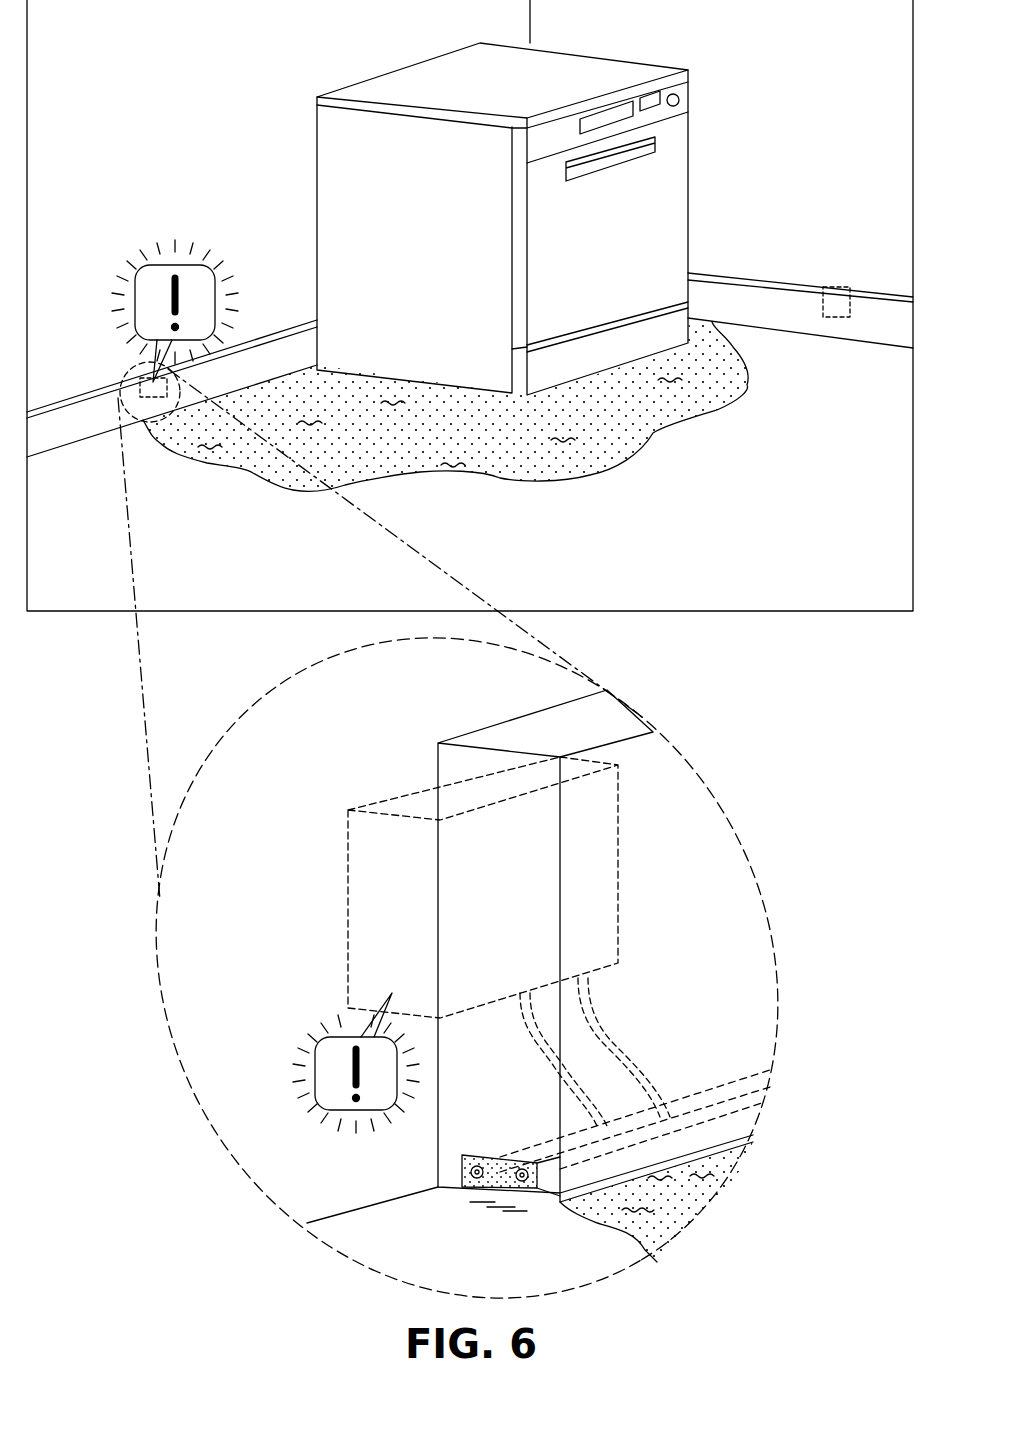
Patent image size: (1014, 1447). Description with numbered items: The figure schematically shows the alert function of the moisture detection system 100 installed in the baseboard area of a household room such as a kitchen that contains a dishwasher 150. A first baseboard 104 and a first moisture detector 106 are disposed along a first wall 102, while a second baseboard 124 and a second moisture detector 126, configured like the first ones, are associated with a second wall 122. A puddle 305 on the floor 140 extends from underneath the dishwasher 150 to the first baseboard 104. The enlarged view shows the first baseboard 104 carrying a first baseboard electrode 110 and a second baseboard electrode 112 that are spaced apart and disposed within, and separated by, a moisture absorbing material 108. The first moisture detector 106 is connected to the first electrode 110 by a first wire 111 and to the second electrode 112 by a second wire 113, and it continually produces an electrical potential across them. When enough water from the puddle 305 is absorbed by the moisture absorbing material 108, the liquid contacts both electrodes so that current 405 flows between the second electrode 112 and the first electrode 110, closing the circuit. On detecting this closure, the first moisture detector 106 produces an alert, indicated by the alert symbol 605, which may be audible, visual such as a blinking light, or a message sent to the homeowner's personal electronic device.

The moisture detection system 100 is at (330, 905).
The first wall 102 is at (128, 126).
The first baseboard 104 is at (283, 352).
The first moisture detector 106 is at (122, 378).
The moisture absorbing material 108 is at (478, 1183).
The first baseboard electrode 110 is at (462, 1172).
The first wire 111 is at (540, 1050).
The second baseboard electrode 112 is at (523, 1183).
The second wire 113 is at (610, 1038).
The second wall 122 is at (800, 159).
The second baseboard 124 is at (758, 301).
The second moisture detector 126 is at (835, 300).
The floor 140 is at (748, 506).
The dishwasher 150 is at (420, 75).
The puddle 305 is at (722, 388).
The current 405 is at (497, 1215).
The alert symbol 605 is at (175, 268).